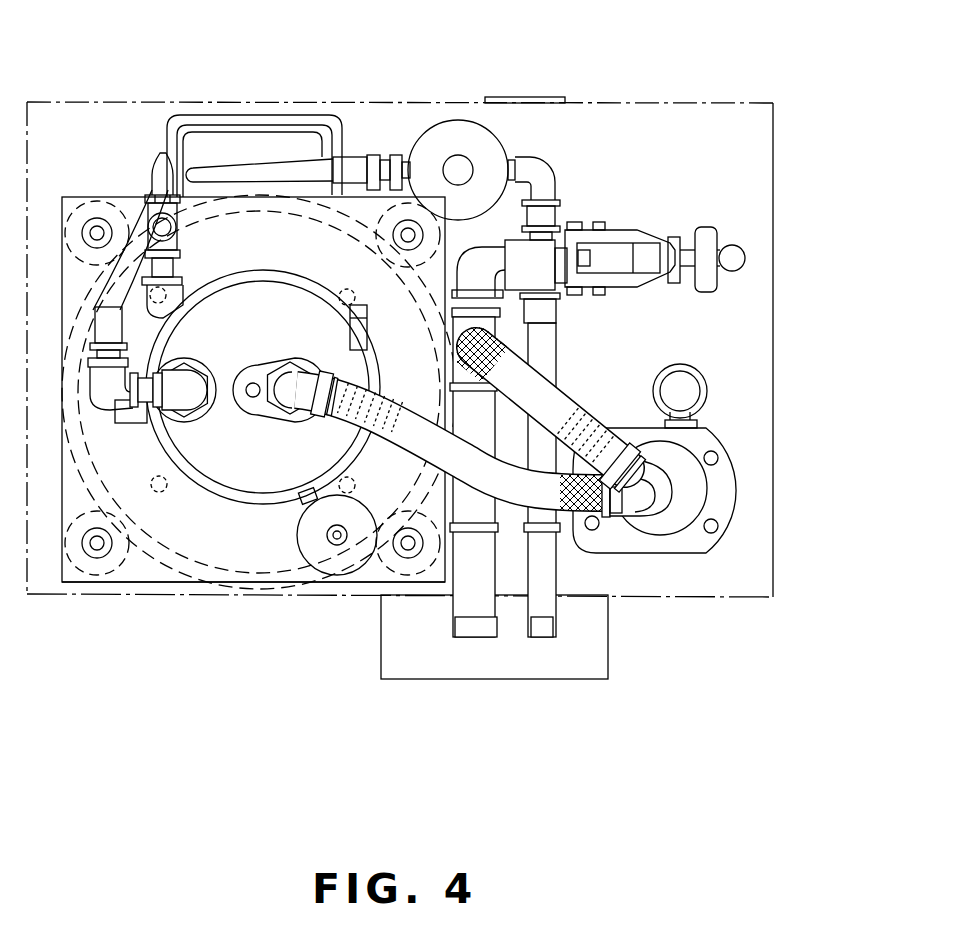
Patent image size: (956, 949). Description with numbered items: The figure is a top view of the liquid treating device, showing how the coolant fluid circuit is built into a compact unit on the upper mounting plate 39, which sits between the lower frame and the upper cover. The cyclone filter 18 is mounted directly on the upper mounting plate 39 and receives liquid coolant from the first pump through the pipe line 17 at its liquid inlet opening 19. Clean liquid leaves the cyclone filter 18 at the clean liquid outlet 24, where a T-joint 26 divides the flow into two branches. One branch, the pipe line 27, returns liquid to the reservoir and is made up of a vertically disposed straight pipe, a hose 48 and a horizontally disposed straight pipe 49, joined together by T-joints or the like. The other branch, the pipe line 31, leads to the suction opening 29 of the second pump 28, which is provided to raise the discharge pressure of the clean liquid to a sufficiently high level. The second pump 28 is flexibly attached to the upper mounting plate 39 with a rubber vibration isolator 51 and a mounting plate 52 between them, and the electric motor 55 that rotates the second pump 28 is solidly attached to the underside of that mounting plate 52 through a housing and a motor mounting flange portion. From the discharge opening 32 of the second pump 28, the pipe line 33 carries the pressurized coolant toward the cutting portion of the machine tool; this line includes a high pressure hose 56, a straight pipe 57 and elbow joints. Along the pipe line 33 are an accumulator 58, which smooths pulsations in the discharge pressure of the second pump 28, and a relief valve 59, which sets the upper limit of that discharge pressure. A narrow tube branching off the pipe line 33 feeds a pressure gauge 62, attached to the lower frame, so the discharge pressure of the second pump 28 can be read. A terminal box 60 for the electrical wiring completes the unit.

The pipe line 17 is at (678, 383).
The cyclone filter 18 is at (735, 493).
The liquid inlet opening 19 is at (700, 422).
The clean liquid outlet 24 is at (672, 500).
The T-joint 26 is at (627, 517).
The pipe line 27 is at (565, 398).
The second pump 28 is at (255, 502).
The suction opening 29 is at (277, 407).
The pipe line 31 is at (408, 415).
The discharge opening 32 is at (193, 412).
The pipe line 33 is at (248, 163).
The upper mounting plate 39 is at (740, 100).
The hose 48 is at (575, 425).
The horizontally disposed straight pipe 49 is at (472, 418).
The rubber vibration isolator 51 is at (97, 583).
The mounting plate 52 is at (140, 575).
The electric motor 55 is at (207, 583).
The high pressure hose 56 is at (305, 167).
The straight pipe 57 is at (545, 343).
The accumulator 58 is at (447, 135).
The relief valve 59 is at (610, 255).
The terminal box 60 is at (592, 660).
The pressure gauge 62 is at (513, 97).